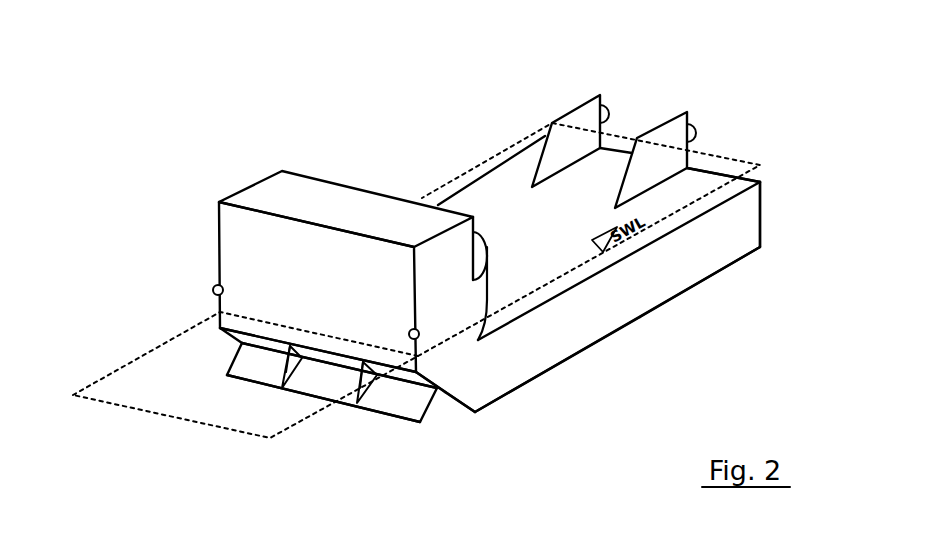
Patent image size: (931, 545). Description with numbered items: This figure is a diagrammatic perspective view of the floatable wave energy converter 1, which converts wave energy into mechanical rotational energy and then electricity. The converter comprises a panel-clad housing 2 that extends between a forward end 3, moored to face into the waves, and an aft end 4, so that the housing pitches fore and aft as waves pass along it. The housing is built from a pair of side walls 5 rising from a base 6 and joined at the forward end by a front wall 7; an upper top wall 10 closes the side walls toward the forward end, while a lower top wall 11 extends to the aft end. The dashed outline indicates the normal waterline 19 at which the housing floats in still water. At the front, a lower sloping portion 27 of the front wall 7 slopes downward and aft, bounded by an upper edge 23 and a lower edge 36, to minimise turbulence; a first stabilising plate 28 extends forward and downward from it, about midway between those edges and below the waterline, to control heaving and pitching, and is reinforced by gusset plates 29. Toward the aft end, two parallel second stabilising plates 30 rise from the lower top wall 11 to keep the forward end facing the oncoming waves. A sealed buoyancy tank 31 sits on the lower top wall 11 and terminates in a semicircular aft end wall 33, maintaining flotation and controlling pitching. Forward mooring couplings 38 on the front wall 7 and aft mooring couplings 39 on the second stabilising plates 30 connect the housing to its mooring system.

The wave energy converter 1 is at (449, 116).
The housing 2 is at (615, 310).
The forward end 3 is at (292, 337).
The aft end 4 is at (763, 202).
The side walls 5 is at (687, 268).
The base 6 is at (565, 362).
The front wall 7 is at (267, 300).
The upper top wall 10 is at (313, 203).
The lower top wall 11 is at (725, 192).
The waterline 19 is at (100, 402).
The upper edge of lower sloping portion 23 is at (240, 353).
The lower sloping portion 27 is at (446, 395).
The first stabilising plate 28 is at (410, 402).
The gusset plates 29 is at (302, 360).
The second stabilising plates 30 is at (566, 114).
The buoyancy tank 31 is at (489, 247).
The aft end wall 33 is at (490, 279).
The lower edge of lower sloping portion 36 is at (477, 414).
The forward mooring couplings 38 is at (212, 288).
The aft mooring couplings 39 is at (608, 113).